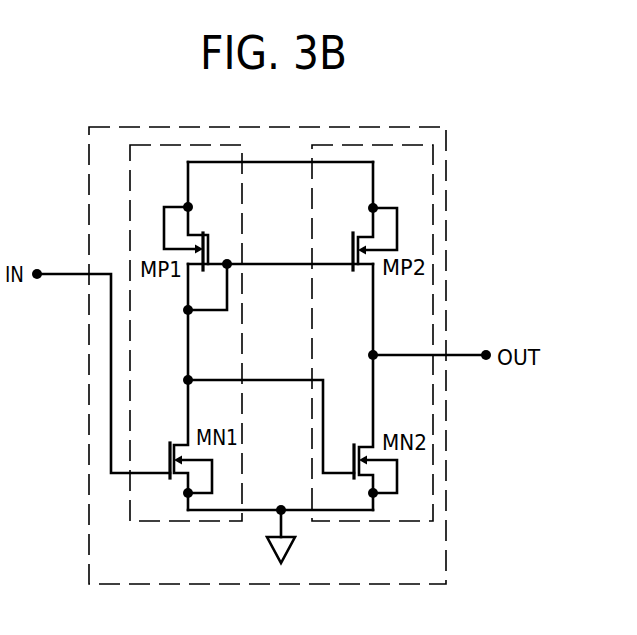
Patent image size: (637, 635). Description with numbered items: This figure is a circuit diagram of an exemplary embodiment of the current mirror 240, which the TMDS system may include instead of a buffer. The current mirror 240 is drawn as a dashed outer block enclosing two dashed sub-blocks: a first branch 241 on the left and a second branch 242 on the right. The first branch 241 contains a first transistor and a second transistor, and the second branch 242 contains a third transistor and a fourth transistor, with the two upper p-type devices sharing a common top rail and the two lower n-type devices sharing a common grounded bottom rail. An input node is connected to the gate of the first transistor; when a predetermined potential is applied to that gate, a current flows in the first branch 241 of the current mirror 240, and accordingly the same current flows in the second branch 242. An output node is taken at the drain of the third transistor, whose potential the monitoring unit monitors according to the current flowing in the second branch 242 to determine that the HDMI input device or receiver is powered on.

The current mirror 240 is at (446, 171).
The first branch 241 is at (194, 522).
The second branch 242 is at (358, 522).